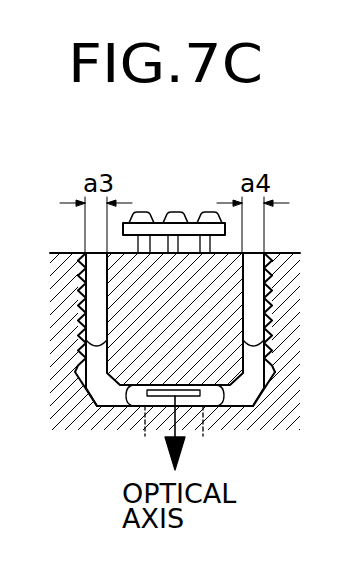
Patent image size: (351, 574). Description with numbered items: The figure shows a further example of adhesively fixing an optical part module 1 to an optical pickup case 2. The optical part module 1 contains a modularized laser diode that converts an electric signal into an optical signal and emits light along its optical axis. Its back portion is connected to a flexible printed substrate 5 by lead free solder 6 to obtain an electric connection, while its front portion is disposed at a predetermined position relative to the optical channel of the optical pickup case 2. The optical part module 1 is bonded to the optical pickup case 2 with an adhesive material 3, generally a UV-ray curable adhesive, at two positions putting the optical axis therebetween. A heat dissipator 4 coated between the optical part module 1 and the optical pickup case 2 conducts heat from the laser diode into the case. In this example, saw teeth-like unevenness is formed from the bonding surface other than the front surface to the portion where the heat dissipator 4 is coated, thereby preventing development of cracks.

The optical part module 1 is at (127, 307).
The optical pickup case 2 is at (82, 417).
The adhesive material 3 is at (100, 387).
The heat dissipator 4 is at (252, 305).
The flexible printed substrate 5 is at (187, 230).
The lead free solder 6 is at (173, 215).